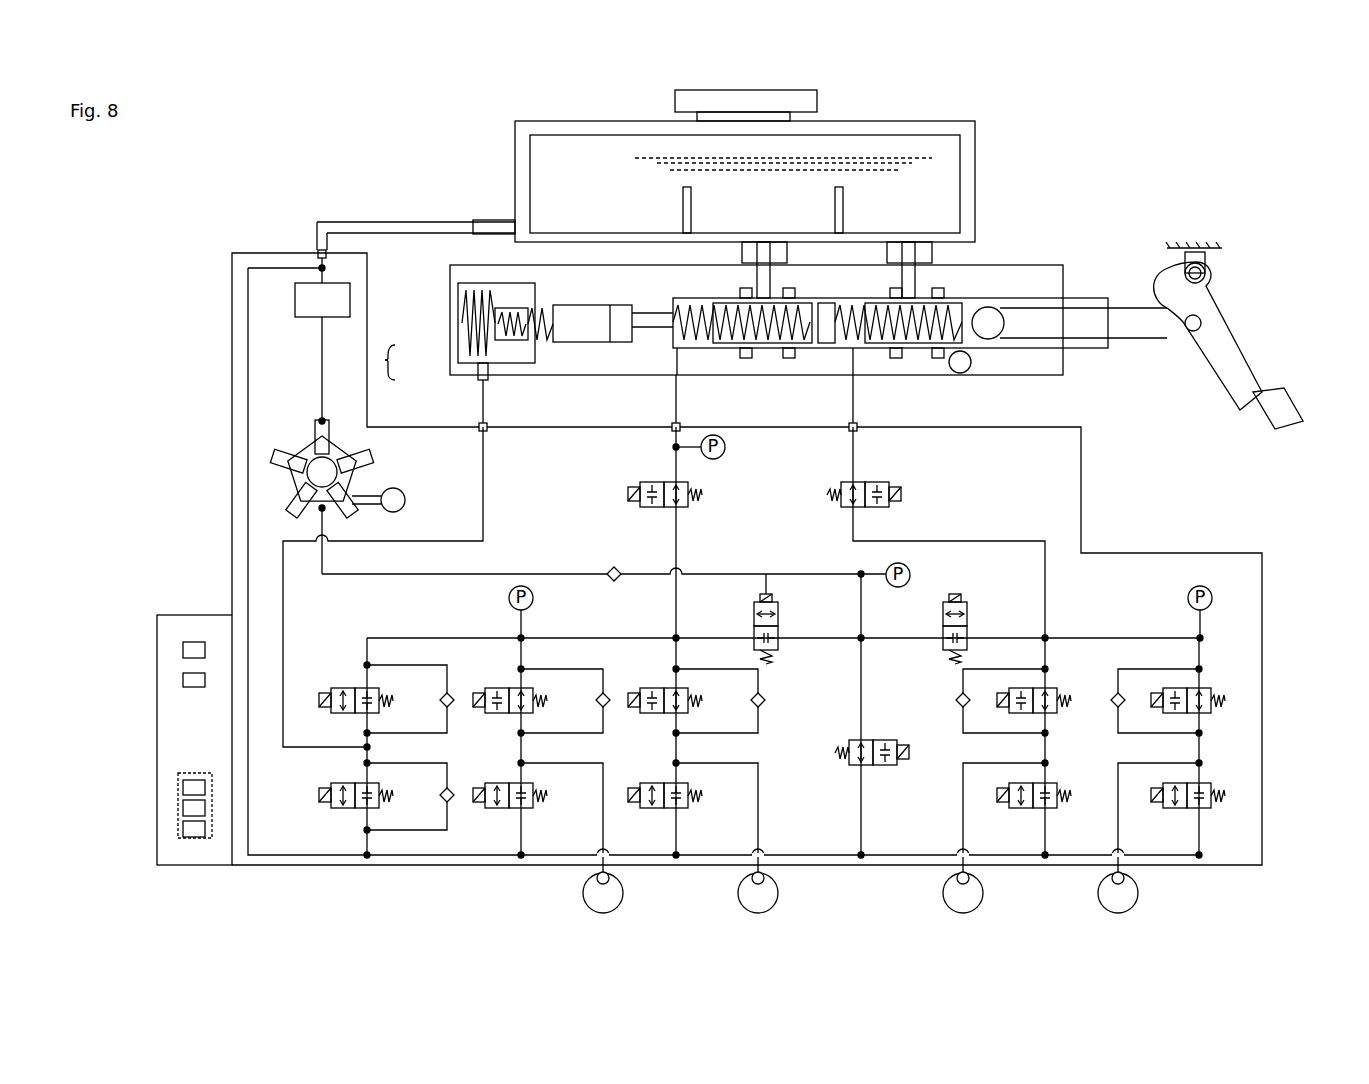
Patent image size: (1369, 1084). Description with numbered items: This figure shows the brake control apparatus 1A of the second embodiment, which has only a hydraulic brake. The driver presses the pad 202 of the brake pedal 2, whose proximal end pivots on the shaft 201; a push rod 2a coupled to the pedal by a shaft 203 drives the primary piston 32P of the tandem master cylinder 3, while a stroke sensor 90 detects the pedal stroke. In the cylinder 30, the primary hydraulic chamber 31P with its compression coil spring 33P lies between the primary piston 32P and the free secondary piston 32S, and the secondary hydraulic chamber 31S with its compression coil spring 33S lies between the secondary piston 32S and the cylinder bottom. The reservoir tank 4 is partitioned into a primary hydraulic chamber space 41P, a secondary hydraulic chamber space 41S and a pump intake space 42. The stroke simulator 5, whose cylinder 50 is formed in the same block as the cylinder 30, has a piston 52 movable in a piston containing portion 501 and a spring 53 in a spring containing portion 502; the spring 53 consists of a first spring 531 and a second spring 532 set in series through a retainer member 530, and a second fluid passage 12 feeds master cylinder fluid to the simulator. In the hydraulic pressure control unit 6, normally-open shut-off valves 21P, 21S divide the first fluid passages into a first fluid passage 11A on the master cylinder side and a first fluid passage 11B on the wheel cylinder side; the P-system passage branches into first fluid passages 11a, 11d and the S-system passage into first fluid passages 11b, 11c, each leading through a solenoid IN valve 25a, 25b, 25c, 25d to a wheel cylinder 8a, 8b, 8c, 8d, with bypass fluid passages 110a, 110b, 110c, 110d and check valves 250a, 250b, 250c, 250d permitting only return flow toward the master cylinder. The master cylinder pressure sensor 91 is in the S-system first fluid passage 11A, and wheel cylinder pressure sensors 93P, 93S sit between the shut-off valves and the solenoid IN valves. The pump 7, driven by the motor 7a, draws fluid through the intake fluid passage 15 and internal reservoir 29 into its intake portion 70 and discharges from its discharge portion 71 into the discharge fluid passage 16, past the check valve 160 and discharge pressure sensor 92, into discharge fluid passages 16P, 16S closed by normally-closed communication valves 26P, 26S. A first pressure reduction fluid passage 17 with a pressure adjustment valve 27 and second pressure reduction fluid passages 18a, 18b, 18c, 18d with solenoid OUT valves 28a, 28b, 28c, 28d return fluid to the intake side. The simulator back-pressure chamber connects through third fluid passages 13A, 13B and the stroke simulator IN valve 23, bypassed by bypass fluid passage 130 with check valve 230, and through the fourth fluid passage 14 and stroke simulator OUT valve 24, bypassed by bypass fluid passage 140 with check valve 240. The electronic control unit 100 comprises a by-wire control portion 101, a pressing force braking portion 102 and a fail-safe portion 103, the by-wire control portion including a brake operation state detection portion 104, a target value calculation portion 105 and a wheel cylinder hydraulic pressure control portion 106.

The brake control apparatus 1A is at (349, 158).
The brake pedal 2 is at (1225, 350).
The push rod 2a is at (1130, 306).
The shaft 201 is at (1205, 270).
The pad 202 is at (1276, 390).
The shaft 203 is at (1202, 323).
The master cylinder 3 is at (1018, 265).
The cylinder 30 is at (1065, 365).
The secondary hydraulic chamber 31S is at (690, 305).
The primary hydraulic chamber 31P is at (860, 350).
The secondary piston 32S is at (800, 345).
The primary piston 32P is at (955, 300).
The compression coil spring 33S is at (745, 360).
The compression coil spring 33P is at (935, 360).
The reservoir tank 4 is at (978, 170).
The secondary hydraulic chamber space 41S is at (798, 216).
The primary hydraulic chamber space 41P is at (935, 214).
The pump intake space 42 is at (557, 224).
The stroke simulator 5 is at (490, 258).
The cylinder 50 is at (458, 330).
The piston containing portion 501 is at (583, 306).
The spring containing portion 502 is at (478, 304).
The piston 52 is at (590, 345).
The spring 53 is at (381, 362).
The first spring 531 is at (478, 363).
The second spring 532 is at (478, 343).
The retainer member 530 is at (508, 370).
The hydraulic pressure control unit 6 is at (1200, 553).
The pump 7 is at (355, 455).
The motor 7a is at (405, 492).
The intake portion 70 is at (318, 422).
The discharge portion 71 is at (318, 508).
The wheel cylinder 8a is at (1137, 878).
The wheel cylinder 8b is at (585, 878).
The wheel cylinder 8c is at (740, 878).
The wheel cylinder 8d is at (982, 878).
The stroke sensor 90 is at (965, 373).
The master cylinder pressure sensor 91 is at (726, 447).
The discharge pressure sensor 92 is at (911, 574).
The S-system wheel cylinder pressure sensor 93S is at (509, 602).
The P-system wheel cylinder pressure sensor 93P is at (1190, 592).
The first fluid passage 11A is at (834, 416).
The first fluid passage 11B is at (674, 555).
The first fluid passage 11a is at (1197, 760).
The first fluid passage 11b is at (523, 760).
The first fluid passage 11c is at (680, 760).
The first fluid passage 11d is at (1043, 760).
The second fluid passage 12 is at (638, 316).
The third fluid passage 13A is at (440, 540).
The third fluid passage 13B is at (403, 638).
The bypass fluid passage 130 is at (385, 666).
The bypass fluid passage 140 is at (390, 833).
The fourth fluid passage 14 is at (364, 853).
The intake fluid passage 15 is at (410, 222).
The discharge fluid passage 16 is at (513, 573).
The discharge fluid passage 16S is at (800, 637).
The discharge fluid passage 16P is at (875, 637).
The check valve 160 is at (612, 572).
The first pressure reduction fluid passage 17 is at (858, 812).
The second pressure reduction fluid passage 18a is at (1197, 835).
The second pressure reduction fluid passage 18b is at (523, 835).
The second pressure reduction fluid passage 18c is at (680, 835).
The second pressure reduction fluid passage 18d is at (1043, 835).
The shut-off valve 21S is at (658, 508).
The shut-off valve 21P is at (845, 508).
The stroke simulator IN valve 23 is at (333, 690).
The check valve 230 is at (445, 696).
The stroke simulator OUT valve 24 is at (333, 785).
The check valve 240 is at (450, 804).
The solenoid IN valve 25a is at (1210, 697).
The solenoid IN valve 25b is at (492, 688).
The solenoid IN valve 25c is at (660, 712).
The solenoid IN valve 25d is at (1050, 712).
The check valve 250a is at (1115, 698).
The check valve 250b is at (601, 694).
The check valve 250c is at (756, 694).
The check valve 250d is at (959, 697).
The bypass fluid passage 110a is at (1116, 676).
The bypass fluid passage 110b is at (604, 672).
The bypass fluid passage 110c is at (760, 727).
The bypass fluid passage 110d is at (960, 706).
The communication valve 26S is at (753, 614).
The communication valve 26P is at (968, 606).
The pressure adjustment valve 27 is at (852, 740).
The solenoid OUT valve 28a is at (1204, 783).
The solenoid OUT valve 28b is at (498, 783).
The solenoid OUT valve 28c is at (648, 783).
The solenoid OUT valve 28d is at (1050, 783).
The internal reservoir 29 is at (300, 318).
The ECU 100 is at (192, 615).
The by-wire control portion 101 is at (188, 838).
The pressing force braking portion 102 is at (183, 650).
The fail-safe portion 103 is at (183, 680).
The brake operation state detection portion 104 is at (183, 790).
The target value calculation portion 105 is at (183, 808).
The wheel cylinder hydraulic pressure control portion 106 is at (183, 828).